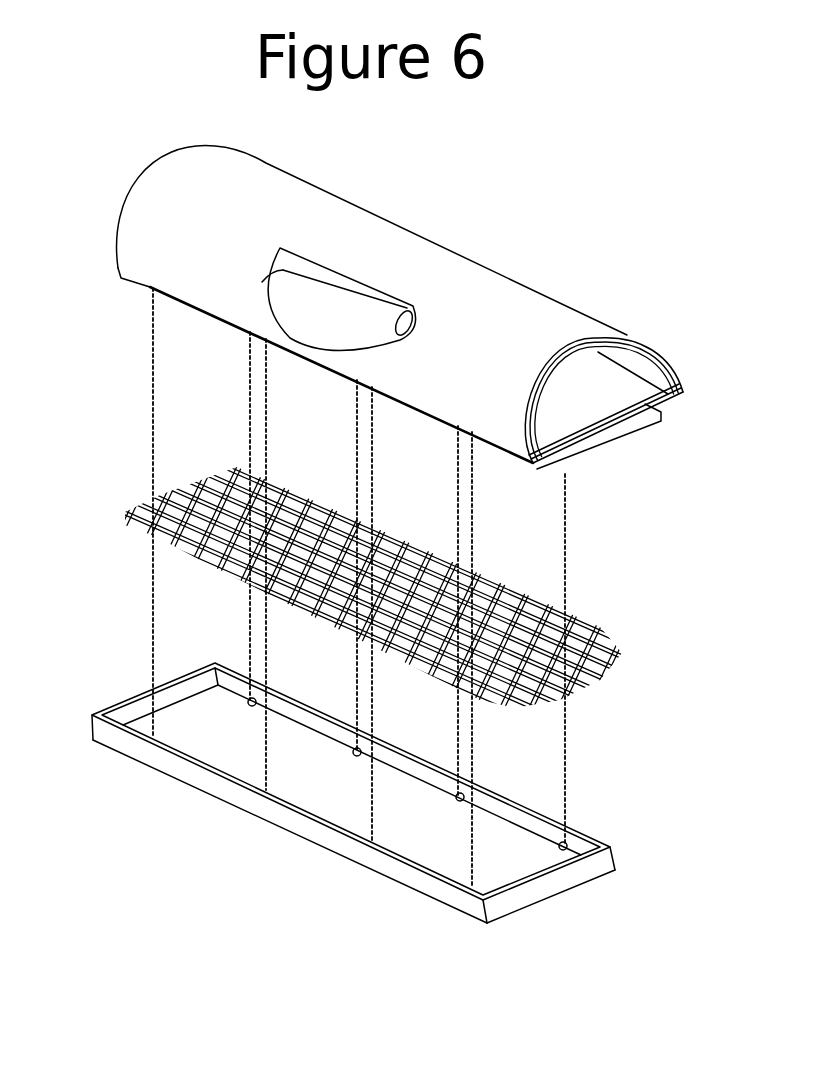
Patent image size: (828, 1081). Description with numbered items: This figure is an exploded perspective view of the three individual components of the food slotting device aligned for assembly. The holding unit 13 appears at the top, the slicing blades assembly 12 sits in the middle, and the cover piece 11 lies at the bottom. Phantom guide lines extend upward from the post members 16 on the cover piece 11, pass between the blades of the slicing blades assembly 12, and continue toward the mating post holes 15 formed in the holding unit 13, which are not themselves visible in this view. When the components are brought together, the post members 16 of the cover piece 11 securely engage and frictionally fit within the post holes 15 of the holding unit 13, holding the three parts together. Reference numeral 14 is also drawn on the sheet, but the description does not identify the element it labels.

The cover piece 11 is at (290, 817).
The slicing blades assembly 12 is at (560, 668).
The holding unit 13 is at (590, 420).
The cover bottom edge lip 14 is at (560, 463).
The post holes 15 is at (153, 295).
The post members 16 is at (242, 710).